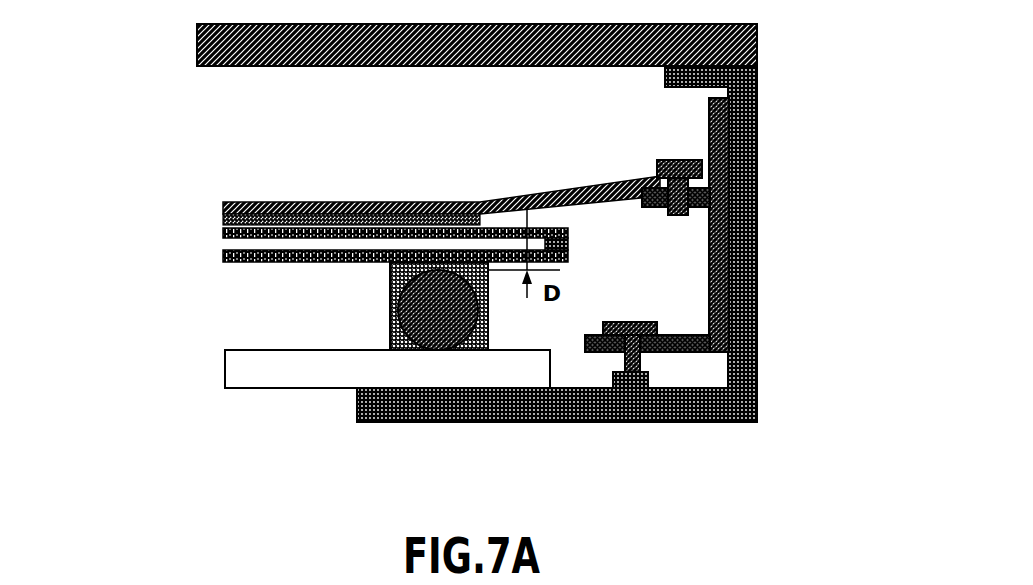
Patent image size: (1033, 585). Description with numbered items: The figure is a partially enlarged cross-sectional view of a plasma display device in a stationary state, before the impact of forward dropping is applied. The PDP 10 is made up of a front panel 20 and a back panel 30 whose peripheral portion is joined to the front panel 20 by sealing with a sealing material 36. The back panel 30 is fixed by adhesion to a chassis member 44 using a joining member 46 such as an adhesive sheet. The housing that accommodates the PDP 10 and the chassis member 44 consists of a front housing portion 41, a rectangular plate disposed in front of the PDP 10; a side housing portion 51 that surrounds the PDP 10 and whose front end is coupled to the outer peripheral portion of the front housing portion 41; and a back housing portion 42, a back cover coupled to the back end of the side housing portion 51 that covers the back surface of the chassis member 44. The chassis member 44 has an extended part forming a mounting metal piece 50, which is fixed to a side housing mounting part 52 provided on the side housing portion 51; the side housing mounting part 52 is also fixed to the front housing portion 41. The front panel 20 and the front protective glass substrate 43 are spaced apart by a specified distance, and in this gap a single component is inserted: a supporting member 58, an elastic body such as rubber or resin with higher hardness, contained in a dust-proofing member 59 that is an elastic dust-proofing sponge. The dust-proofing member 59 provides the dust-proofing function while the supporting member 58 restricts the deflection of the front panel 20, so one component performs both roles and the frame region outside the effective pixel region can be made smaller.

The PDP 10 is at (294, 287).
The front panel 20 is at (222, 259).
The back panel 30 is at (222, 232).
The sealing material 36 is at (568, 240).
The front housing portion 41 is at (757, 397).
The back housing portion 42 is at (755, 38).
The front protective glass substrate 43 is at (290, 368).
The chassis member 44 is at (348, 202).
The joining member 46 is at (225, 214).
The mounting metal piece 50 is at (597, 198).
The side housing portion 51 is at (757, 137).
The side housing mounting part 52 is at (759, 204).
The supporting member 58 is at (438, 337).
The dust-proofing member 59 is at (490, 297).